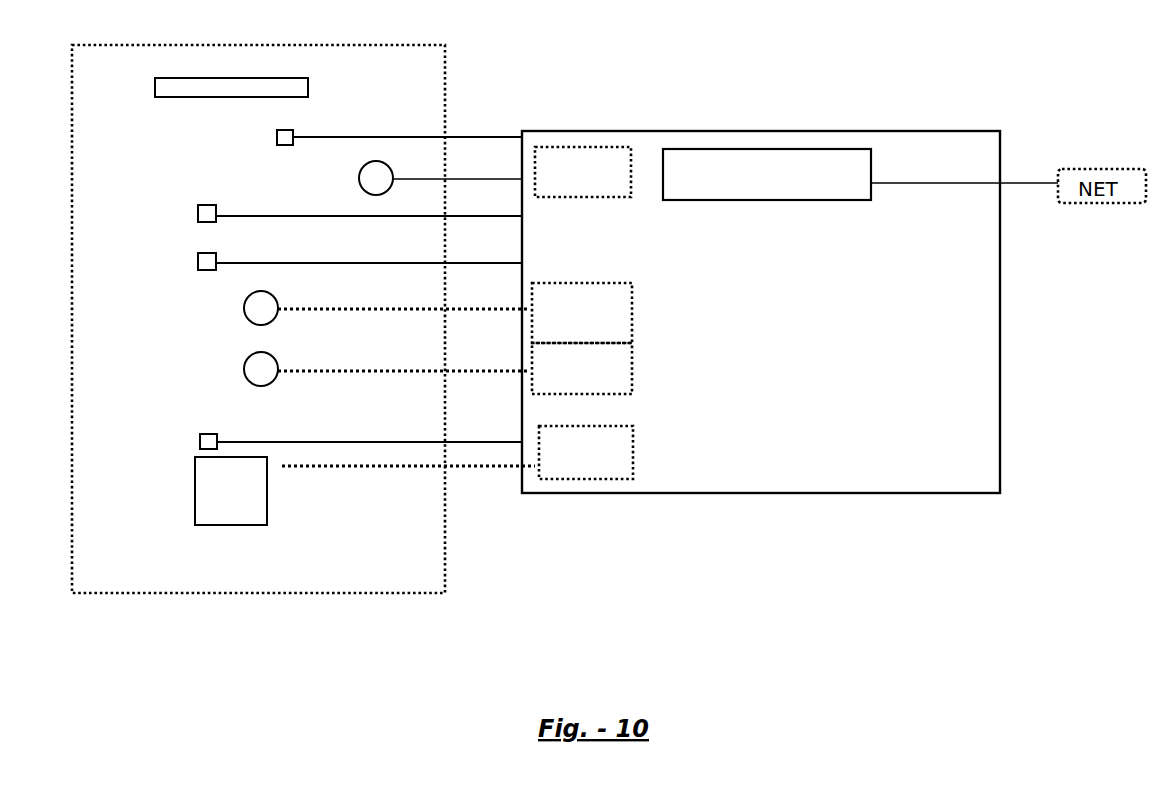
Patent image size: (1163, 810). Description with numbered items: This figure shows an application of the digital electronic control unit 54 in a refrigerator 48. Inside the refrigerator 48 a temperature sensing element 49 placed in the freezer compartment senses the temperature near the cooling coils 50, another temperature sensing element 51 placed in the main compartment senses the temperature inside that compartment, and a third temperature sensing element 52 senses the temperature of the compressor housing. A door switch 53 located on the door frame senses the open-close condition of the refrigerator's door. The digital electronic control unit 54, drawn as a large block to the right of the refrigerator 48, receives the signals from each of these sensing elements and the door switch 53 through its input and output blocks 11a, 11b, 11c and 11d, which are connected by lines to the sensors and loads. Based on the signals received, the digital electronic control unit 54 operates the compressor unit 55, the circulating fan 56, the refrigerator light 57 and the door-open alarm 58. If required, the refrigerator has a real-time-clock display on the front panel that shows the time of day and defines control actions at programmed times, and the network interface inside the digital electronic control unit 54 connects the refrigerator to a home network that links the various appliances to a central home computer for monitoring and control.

The refrigerator 48 is at (258, 298).
The temperature sensing element 49 is at (399, 126).
The cooling coils 50 is at (252, 89).
The temperature sensing element 51 is at (360, 205).
The temperature sensing element 52 is at (361, 432).
The door switch 53 is at (360, 253).
The digital electronic control unit 54 is at (790, 293).
The compressor unit 55 is at (365, 491).
The circulating fan 56 is at (387, 304).
The refrigerator light 57 is at (440, 173).
The door-open alarm 58 is at (387, 365).
The interface module 11a is at (583, 172).
The interface module 11b is at (582, 313).
The interface module 11c is at (582, 368).
The interface module 11d is at (586, 452).